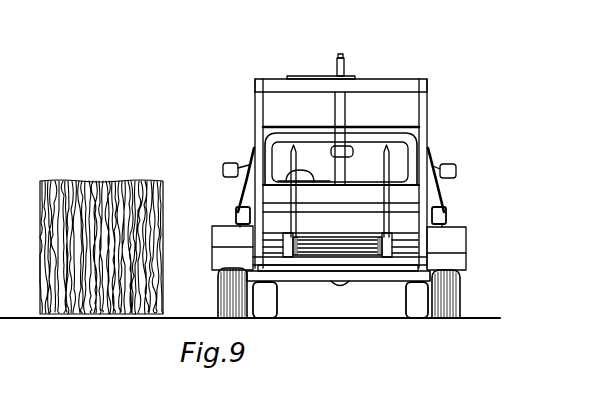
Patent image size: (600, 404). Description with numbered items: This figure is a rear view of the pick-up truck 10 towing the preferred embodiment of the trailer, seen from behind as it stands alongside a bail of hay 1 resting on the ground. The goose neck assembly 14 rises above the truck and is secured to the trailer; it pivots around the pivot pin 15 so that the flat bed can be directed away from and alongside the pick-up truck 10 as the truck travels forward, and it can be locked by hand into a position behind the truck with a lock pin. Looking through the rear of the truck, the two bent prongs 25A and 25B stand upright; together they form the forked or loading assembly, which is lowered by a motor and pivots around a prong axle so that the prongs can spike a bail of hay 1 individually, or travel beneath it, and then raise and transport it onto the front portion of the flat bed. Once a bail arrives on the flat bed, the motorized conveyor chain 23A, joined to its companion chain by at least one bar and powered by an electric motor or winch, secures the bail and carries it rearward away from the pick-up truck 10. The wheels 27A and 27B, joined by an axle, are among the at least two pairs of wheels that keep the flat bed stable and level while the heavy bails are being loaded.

The bail of hay 1 is at (106, 178).
The pick-up truck 10 is at (362, 127).
The goose neck assembly 14 is at (382, 72).
The pivot pin 15 is at (344, 53).
The motorized conveyor chain 23A is at (296, 236).
The bent prong 25A is at (289, 162).
The bent prong 25B is at (391, 162).
The wheel 27A is at (212, 297).
The wheel 27B is at (462, 299).